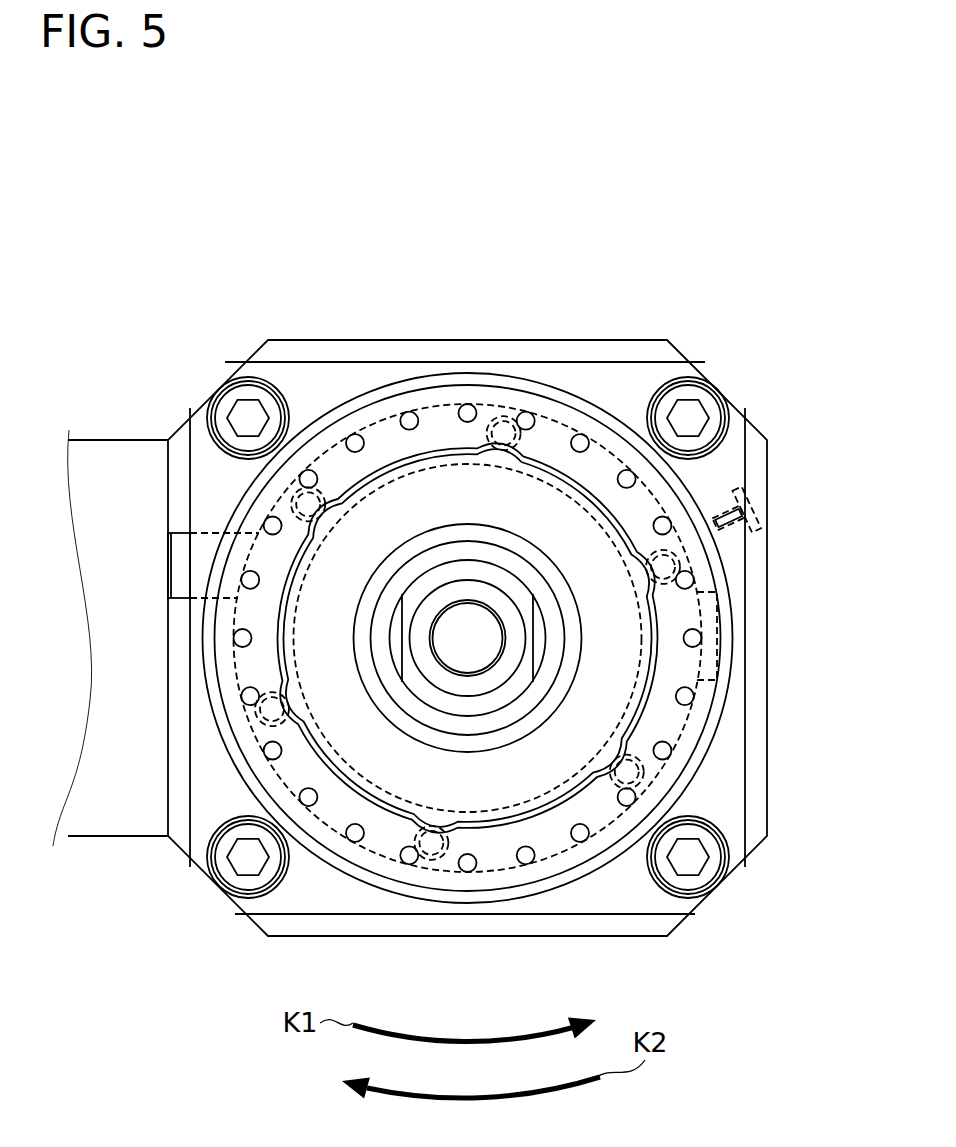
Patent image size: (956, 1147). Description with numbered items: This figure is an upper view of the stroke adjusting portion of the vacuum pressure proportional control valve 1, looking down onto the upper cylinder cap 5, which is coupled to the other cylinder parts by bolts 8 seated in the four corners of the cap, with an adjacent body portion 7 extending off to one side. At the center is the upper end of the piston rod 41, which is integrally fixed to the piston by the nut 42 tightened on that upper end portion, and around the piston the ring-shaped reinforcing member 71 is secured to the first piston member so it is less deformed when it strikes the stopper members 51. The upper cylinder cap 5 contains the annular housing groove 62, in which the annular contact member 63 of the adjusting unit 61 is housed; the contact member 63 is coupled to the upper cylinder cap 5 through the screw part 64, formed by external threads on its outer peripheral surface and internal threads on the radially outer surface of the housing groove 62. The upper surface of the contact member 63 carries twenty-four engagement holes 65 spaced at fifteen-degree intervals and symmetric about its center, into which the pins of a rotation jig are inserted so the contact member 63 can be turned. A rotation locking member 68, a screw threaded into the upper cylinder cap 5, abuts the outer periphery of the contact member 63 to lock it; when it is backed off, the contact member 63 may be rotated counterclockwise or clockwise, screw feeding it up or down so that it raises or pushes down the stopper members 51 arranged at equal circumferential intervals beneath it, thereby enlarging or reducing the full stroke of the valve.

The vacuum pressure proportional control valve 1 is at (462, 161).
The upper cylinder cap 5 is at (297, 377).
The shaft 7 is at (105, 457).
The bolts 8 is at (240, 410).
The piston rod 41 is at (493, 677).
The nut 42 is at (465, 707).
The stopper member 51 is at (497, 418).
The adjusting unit 61 is at (375, 378).
The housing groove 62 is at (581, 434).
The contact member 63 is at (547, 407).
The screw part 64 is at (450, 377).
The engagement holes 65 is at (627, 470).
The rotation locking member 68 is at (733, 541).
The reinforcing member 71 is at (352, 438).